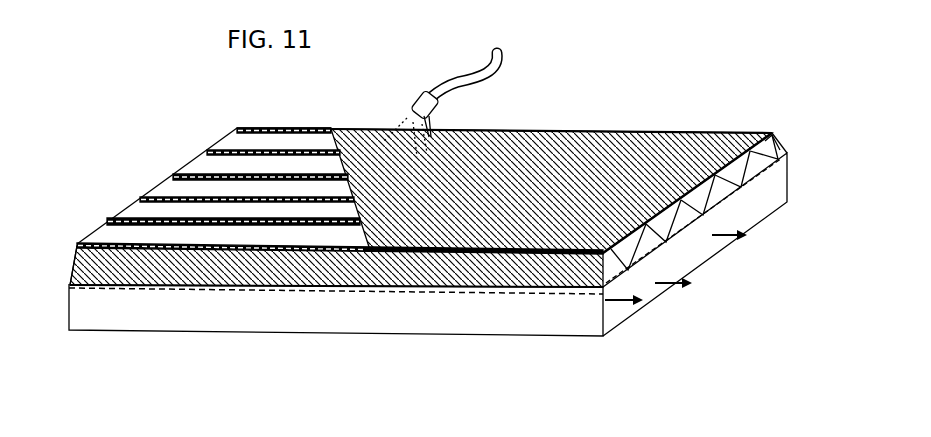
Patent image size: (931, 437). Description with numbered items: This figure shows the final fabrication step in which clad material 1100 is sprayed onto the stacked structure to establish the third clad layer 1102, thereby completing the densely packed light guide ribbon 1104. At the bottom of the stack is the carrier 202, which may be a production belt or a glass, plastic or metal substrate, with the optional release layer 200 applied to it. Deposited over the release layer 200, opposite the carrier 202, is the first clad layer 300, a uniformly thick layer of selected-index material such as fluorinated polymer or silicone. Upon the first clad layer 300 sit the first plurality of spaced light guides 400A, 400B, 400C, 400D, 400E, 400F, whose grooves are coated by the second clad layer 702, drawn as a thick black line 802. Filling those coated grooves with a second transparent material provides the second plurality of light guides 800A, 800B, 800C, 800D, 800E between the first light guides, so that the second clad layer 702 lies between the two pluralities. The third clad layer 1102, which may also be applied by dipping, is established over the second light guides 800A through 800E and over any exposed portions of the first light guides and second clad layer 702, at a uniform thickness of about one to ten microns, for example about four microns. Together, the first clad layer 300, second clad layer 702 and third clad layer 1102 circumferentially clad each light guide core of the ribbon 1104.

The release layer 200 is at (401, 300).
The carrier 202 is at (348, 315).
The first clad layer 300 is at (561, 287).
The second clad layer 702 is at (268, 126).
The second plurality of light guides 800A is at (123, 241).
The second plurality of light guides 800B is at (141, 214).
The second plurality of light guides 800C is at (173, 190).
The second plurality of light guides 800D is at (200, 165).
The second plurality of light guides 800E is at (237, 143).
The thick black line 802 is at (743, 137).
The first plurality of spaced light guides 400A is at (623, 277).
The first plurality of spaced light guides 400B is at (668, 255).
The first plurality of spaced light guides 400C is at (693, 227).
The first plurality of spaced light guides 400D is at (727, 202).
The first plurality of spaced light guides 400E is at (753, 175).
The first plurality of spaced light guides 400F is at (773, 141).
The clad material 1100 is at (401, 113).
The third clad layer 1102 is at (528, 142).
The densely packed light guide ribbon 1104 is at (658, 108).